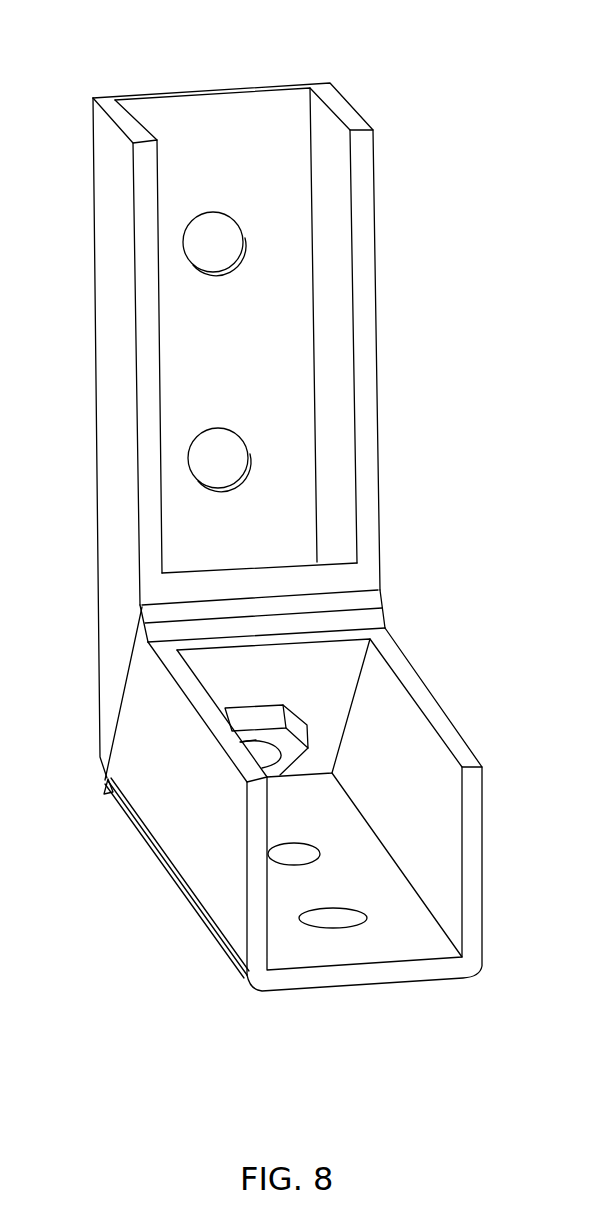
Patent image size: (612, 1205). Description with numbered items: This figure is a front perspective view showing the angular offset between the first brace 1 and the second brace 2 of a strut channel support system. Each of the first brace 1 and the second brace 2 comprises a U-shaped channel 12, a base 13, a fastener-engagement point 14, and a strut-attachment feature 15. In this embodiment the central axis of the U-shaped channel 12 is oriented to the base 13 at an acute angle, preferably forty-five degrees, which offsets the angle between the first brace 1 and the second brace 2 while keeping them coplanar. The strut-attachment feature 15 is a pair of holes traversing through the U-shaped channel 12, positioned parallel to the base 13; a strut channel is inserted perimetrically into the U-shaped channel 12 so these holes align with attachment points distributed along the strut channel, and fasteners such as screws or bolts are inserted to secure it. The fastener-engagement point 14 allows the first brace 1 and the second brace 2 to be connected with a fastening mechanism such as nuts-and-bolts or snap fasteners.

The first brace 1 is at (123, 451).
The second brace 2 is at (210, 808).
The U-shaped channel 12 is at (208, 112).
The base 13 is at (382, 602).
The fastener-engagement point 14 is at (276, 718).
The strut-attachment feature 15 is at (222, 254).